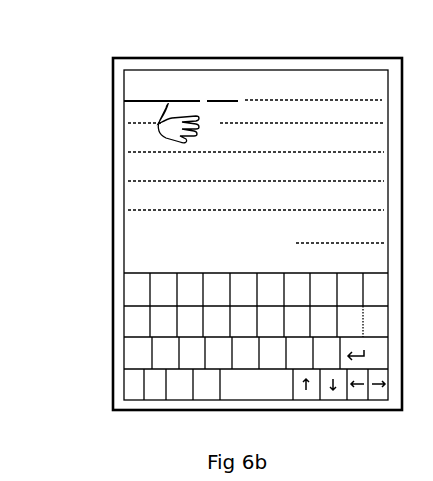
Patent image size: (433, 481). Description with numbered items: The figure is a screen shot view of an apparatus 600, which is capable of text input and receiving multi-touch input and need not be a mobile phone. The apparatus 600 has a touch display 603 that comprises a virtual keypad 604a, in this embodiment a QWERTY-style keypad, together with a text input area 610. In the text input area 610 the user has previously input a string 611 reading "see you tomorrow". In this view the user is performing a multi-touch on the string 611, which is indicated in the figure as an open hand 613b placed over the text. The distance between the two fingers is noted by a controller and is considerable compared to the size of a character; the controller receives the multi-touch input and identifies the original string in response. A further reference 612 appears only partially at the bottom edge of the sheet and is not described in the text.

The apparatus 600 is at (100, 75).
The string 611 is at (145, 84).
The open hand 613b is at (112, 126).
The text input area 610 is at (143, 179).
The touch display 603 is at (112, 261).
The virtual keypad 604a is at (122, 313).
The display region 612 is at (170, 478).